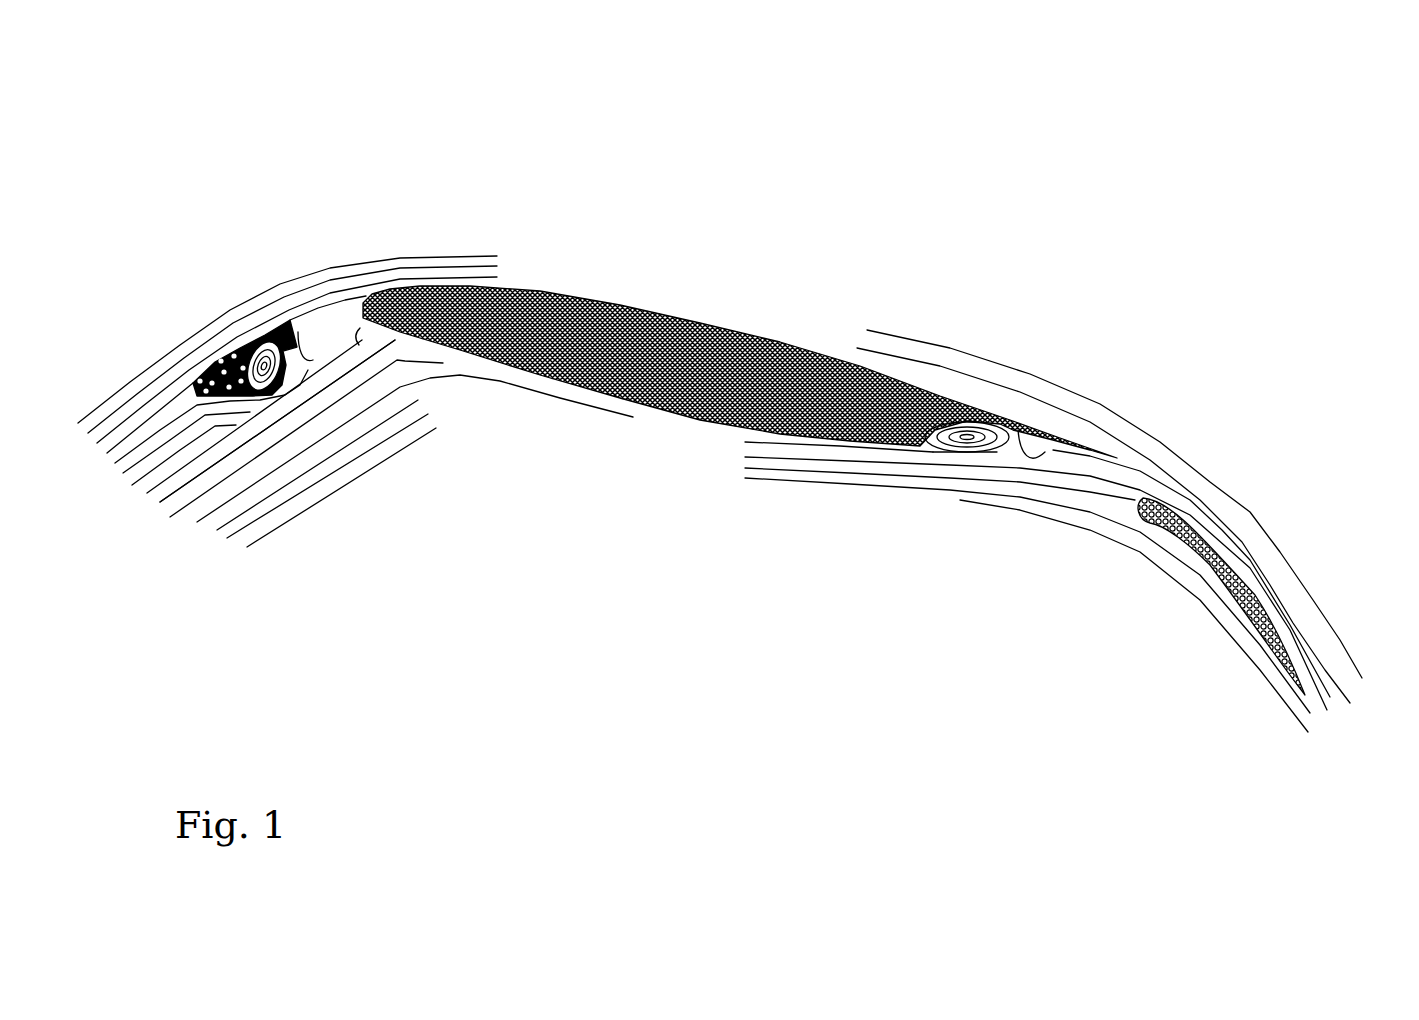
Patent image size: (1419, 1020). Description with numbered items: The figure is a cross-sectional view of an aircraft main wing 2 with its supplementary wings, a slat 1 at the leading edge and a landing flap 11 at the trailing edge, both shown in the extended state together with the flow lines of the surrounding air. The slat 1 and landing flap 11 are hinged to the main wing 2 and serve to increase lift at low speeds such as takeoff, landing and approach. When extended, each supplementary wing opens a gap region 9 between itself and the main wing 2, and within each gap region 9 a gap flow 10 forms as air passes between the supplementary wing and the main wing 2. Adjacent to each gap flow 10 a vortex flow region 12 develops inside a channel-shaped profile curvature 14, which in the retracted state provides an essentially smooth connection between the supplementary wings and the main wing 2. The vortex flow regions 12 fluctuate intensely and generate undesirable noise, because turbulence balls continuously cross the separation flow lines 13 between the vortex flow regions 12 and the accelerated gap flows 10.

The slat 1 is at (198, 347).
The main wing 2 is at (740, 326).
The gap region 9 is at (720, 392).
The gap flow 10 is at (748, 523).
The landing flap 11 is at (1278, 596).
The vortex flow region 12 is at (625, 483).
The separation flow line 13 is at (584, 483).
The profile curvature 14 is at (311, 358).